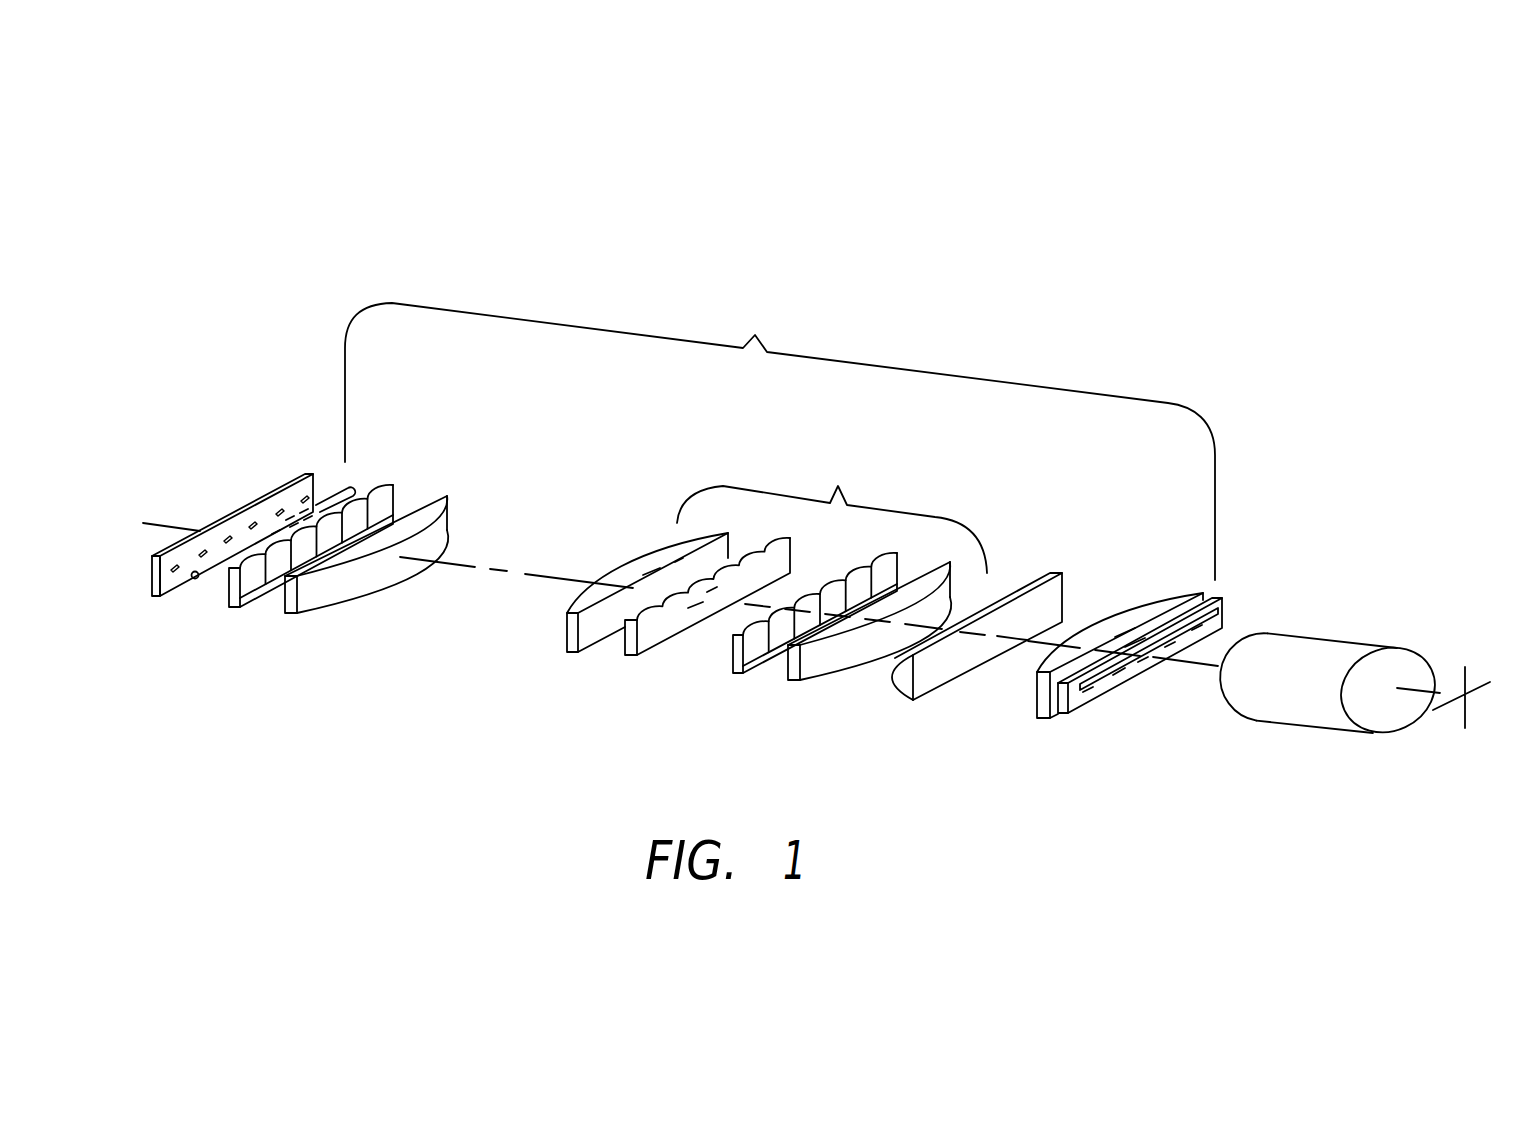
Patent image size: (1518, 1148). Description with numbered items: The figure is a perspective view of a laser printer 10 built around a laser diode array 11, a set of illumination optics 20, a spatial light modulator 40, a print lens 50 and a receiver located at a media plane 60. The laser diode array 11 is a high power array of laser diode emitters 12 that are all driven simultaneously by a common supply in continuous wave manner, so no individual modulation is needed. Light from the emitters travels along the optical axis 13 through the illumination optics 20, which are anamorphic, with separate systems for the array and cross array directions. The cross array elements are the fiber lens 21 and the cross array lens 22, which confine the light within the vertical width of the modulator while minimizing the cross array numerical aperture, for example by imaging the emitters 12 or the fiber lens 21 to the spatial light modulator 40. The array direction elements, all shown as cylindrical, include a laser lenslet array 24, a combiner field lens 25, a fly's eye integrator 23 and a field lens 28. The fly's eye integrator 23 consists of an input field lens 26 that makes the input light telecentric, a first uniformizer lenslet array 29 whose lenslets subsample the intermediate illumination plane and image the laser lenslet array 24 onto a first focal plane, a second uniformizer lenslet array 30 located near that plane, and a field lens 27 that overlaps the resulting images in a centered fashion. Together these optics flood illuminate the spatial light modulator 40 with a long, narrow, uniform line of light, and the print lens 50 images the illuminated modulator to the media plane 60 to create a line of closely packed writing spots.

The laser printer 10 is at (334, 280).
The laser diode array 11 is at (242, 508).
The laser diode emitters 12 is at (318, 490).
The optical axis 13 is at (510, 570).
The illumination optics 20 is at (780, 438).
The fiber lens 21 is at (198, 582).
The cross array lens 22 is at (1032, 583).
The fly's eye integrator 23 is at (832, 510).
The laser lenslet array 24 is at (250, 595).
The combiner field lens 25 is at (373, 583).
The input field lens 26 is at (568, 627).
The field lens 27 is at (855, 658).
The field lens 28 is at (1137, 612).
The first uniformizer lenslet array 29 is at (645, 653).
The second uniformizer lenslet array 30 is at (753, 660).
The spatial light modulator 40 is at (1137, 673).
The print lens 50 is at (1308, 657).
The media plane 60 is at (1450, 713).